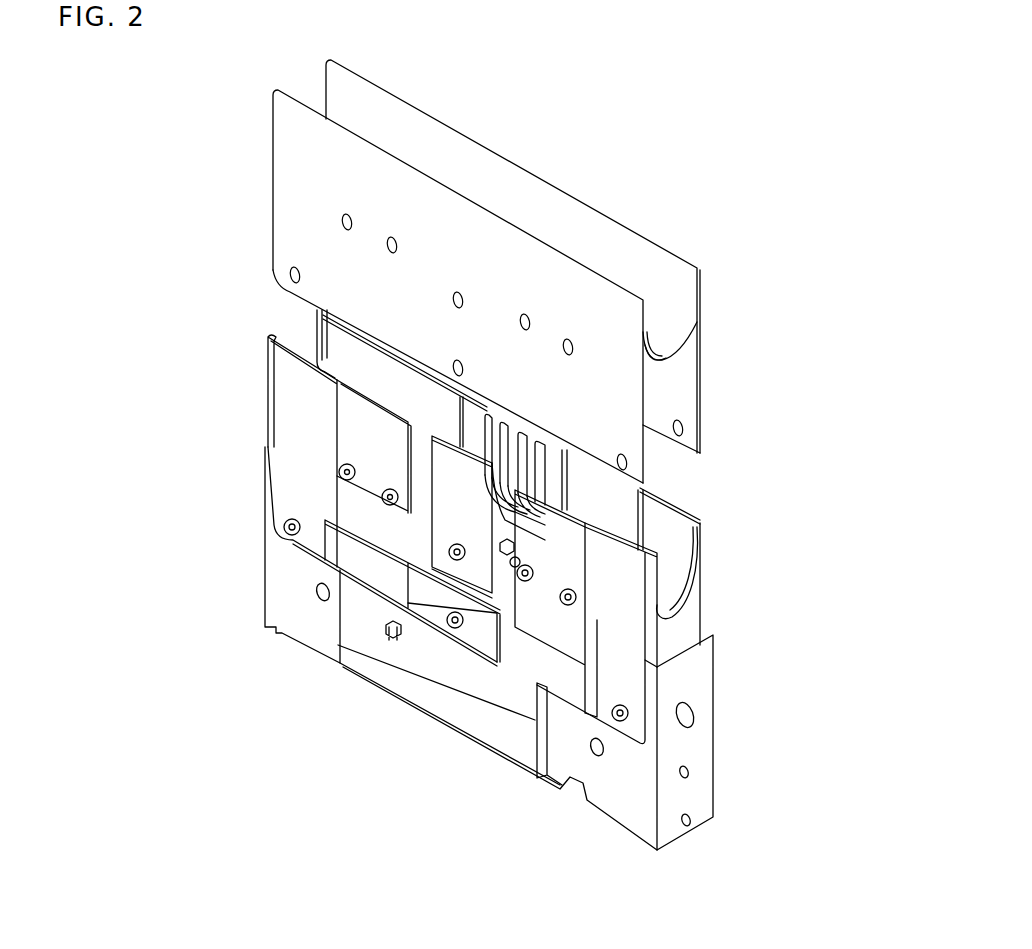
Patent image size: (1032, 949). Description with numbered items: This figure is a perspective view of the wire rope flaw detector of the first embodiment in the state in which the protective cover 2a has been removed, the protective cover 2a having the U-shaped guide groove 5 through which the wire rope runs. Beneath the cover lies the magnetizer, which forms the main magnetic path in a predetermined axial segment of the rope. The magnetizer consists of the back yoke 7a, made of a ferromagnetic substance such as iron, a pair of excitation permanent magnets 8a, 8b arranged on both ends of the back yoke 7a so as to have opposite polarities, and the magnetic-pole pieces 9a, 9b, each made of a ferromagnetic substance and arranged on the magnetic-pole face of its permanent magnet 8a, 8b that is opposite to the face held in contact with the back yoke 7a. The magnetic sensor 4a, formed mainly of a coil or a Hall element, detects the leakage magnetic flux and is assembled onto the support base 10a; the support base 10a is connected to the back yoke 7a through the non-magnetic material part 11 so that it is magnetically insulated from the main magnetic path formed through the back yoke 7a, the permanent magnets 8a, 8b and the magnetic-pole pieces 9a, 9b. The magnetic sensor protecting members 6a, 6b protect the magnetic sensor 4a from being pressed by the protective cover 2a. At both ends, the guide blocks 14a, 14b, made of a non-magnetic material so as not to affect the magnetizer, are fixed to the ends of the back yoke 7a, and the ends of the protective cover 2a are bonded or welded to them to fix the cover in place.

The protective cover 2a is at (560, 227).
The U-shaped guide groove 5 is at (673, 350).
The magnetic sensor 4a is at (527, 430).
The magnetic sensor protecting member 6a is at (525, 415).
The magnetic sensor protecting member 6b is at (540, 473).
The magnetic-pole piece 9a is at (420, 395).
The magnetic-pole piece 9b is at (560, 568).
The excitation permanent magnet 8a is at (370, 517).
The excitation permanent magnet 8b is at (560, 632).
The back yoke 7a is at (338, 542).
The guide block 14a is at (312, 400).
The guide block 14b is at (653, 643).
The support base 10a is at (455, 552).
The non-magnetic material part 11 is at (455, 620).